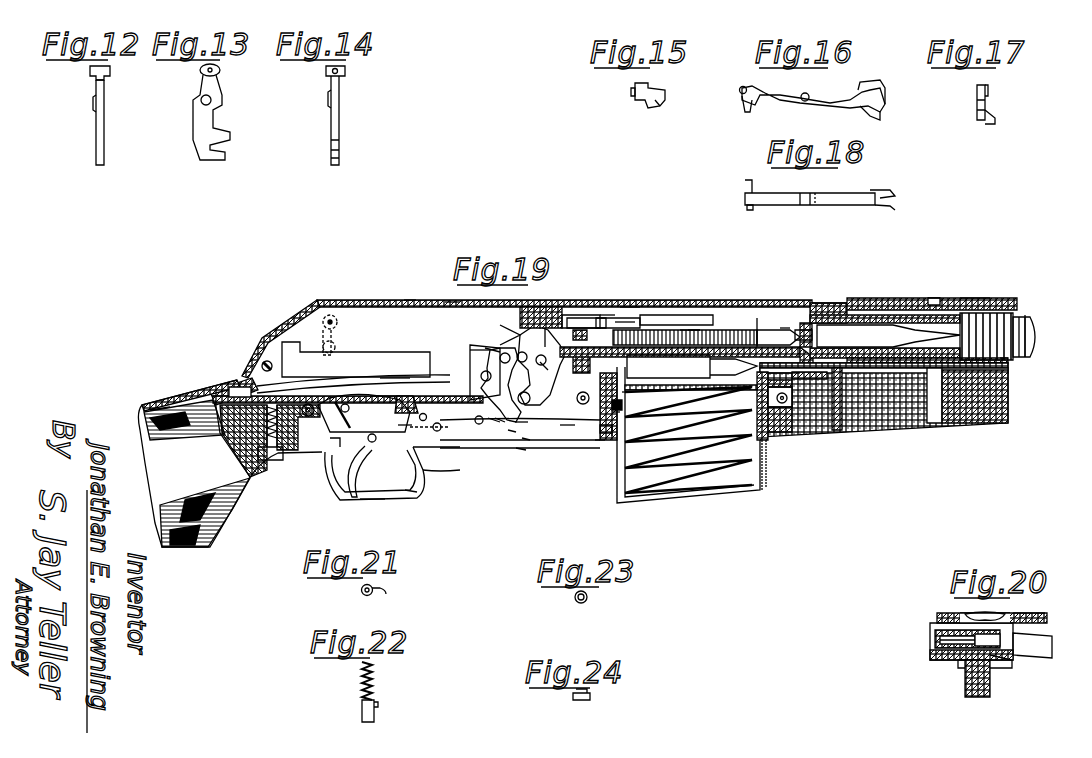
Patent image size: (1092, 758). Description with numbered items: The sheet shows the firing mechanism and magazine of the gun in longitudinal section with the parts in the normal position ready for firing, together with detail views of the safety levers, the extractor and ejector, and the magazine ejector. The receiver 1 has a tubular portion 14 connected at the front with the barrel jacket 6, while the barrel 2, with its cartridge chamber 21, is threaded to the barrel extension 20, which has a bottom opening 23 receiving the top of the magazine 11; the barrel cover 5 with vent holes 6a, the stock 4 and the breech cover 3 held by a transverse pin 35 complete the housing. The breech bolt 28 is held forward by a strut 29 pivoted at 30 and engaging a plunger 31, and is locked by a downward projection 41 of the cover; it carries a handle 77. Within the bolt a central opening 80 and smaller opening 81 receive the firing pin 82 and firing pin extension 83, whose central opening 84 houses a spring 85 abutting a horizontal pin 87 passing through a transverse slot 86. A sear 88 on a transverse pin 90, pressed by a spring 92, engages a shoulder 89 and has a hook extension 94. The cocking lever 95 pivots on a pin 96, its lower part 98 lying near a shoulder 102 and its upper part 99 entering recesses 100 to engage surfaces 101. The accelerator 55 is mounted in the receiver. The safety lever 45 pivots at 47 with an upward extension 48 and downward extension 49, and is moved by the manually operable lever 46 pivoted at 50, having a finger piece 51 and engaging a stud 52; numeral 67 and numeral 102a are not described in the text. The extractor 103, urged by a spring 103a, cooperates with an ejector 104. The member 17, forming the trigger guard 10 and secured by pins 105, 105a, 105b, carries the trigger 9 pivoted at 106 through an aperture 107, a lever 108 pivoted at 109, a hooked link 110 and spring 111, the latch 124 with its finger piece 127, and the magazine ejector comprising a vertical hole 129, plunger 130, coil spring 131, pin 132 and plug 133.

In FIG. 19, the receiver 1 is at (605, 320).
In FIG. 19, the barrel 2 is at (1036, 345).
In FIG. 19, the breech cover 3 is at (404, 300).
In FIG. 19, the stock 4 is at (156, 408).
In FIG. 19, the barrel cover 5 is at (975, 305).
In FIG. 19, the barrel jacket 6 is at (1012, 362).
In FIG. 19, the vent holes 6a is at (938, 298).
In FIG. 19, the trigger 9 is at (352, 452).
In FIG. 19, the trigger guard 10 is at (372, 500).
In FIG. 19, the magazine 11 is at (767, 468).
In FIG. 19, the tubular portion 14 is at (628, 308).
In FIG. 19, the member 17 is at (598, 442).
In FIG. 19, the barrel extension 20 is at (822, 303).
In FIG. 20, the barrel extension 20 is at (940, 612).
In FIG. 19, the cartridge chamber 21 is at (856, 342).
In FIG. 19, the bottom opening 23 is at (768, 363).
In FIG. 19, the breech bolt 28 is at (520, 332).
In FIG. 20, the breech bolt 28 is at (935, 628).
In FIG. 19, the strut 29 is at (396, 380).
In FIG. 19, the pivot 30 is at (485, 375).
In FIG. 19, the plunger 31 is at (240, 392).
In FIG. 19, the transverse pin 35 is at (260, 364).
In FIG. 19, the downward projection 41 is at (536, 308).
In FIG. 15, the connecting safety lever 45 is at (645, 108).
In FIG. 16, the connecting safety lever 45 is at (786, 100).
In FIG. 17, the connecting safety lever 45 is at (980, 122).
In FIG. 18, the connecting safety lever 45 is at (795, 207).
In FIG. 19, the connecting safety lever 45 is at (362, 416).
In FIG. 12, the manually operable safety lever 46 is at (105, 135).
In FIG. 13, the manually operable safety lever 46 is at (228, 95).
In FIG. 14, the manually operable safety lever 46 is at (340, 130).
In FIG. 19, the manually operable safety lever 46 is at (322, 337).
In FIG. 16, the pivot stud 47 is at (806, 101).
In FIG. 18, the pivot stud 47 is at (822, 206).
In FIG. 19, the pivot stud 47 is at (408, 395).
In FIG. 16, the upward extension 48 is at (882, 95).
In FIG. 17, the upward extension 48 is at (986, 96).
In FIG. 18, the upward extension 48 is at (882, 196).
In FIG. 19, the upward extension 48 is at (476, 425).
In FIG. 15, the downward extension 49 is at (658, 108).
In FIG. 16, the downward extension 49 is at (746, 104).
In FIG. 18, the downward extension 49 is at (752, 186).
In FIG. 19, the downward extension 49 is at (348, 414).
In FIG. 12, the pivot 50 is at (96, 108).
In FIG. 13, the pivot 50 is at (213, 105).
In FIG. 19, the pivot 50 is at (340, 345).
In FIG. 12, the finger piece 51 is at (92, 70).
In FIG. 13, the finger piece 51 is at (220, 70).
In FIG. 14, the finger piece 51 is at (346, 70).
In FIG. 19, the finger piece 51 is at (340, 322).
In FIG. 15, the stud 52 is at (633, 92).
In FIG. 16, the stud 52 is at (738, 90).
In FIG. 18, the stud 52 is at (750, 207).
In FIG. 19, the accelerator 55 is at (530, 398).
In FIG. 16, the sear nose 67 is at (880, 113).
In FIG. 17, the sear nose 67 is at (996, 118).
In FIG. 18, the sear nose 67 is at (880, 207).
In FIG. 20, the handle 77 is at (965, 678).
In FIG. 19, the central opening 80 is at (800, 335).
In FIG. 20, the central opening 80 is at (987, 639).
In FIG. 19, the smaller opening 81 is at (790, 323).
In FIG. 20, the smaller opening 81 is at (1032, 645).
In FIG. 19, the firing pin 82 is at (692, 330).
In FIG. 20, the firing pin 82 is at (935, 640).
In FIG. 19, the firing pin extension 83 is at (572, 315).
In FIG. 20, the firing pin extension 83 is at (935, 648).
In FIG. 19, the central opening 84 is at (685, 330).
In FIG. 19, the spring 85 is at (666, 330).
In FIG. 19, the transverse slot 86 is at (600, 320).
In FIG. 19, the horizontal pin 87 is at (623, 322).
In FIG. 19, the sear 88 is at (490, 350).
In FIG. 19, the shoulder 89 is at (445, 302).
In FIG. 19, the transverse pin 90 is at (510, 352).
In FIG. 19, the spring 92 is at (478, 352).
In FIG. 19, the hook extension 94 is at (500, 440).
In FIG. 19, the cocking lever 95 is at (527, 445).
In FIG. 19, the transverse pin 96 is at (540, 365).
In FIG. 19, the lower part 98 is at (522, 428).
In FIG. 19, the upper part 99 is at (537, 352).
In FIG. 19, the recesses 100 is at (540, 322).
In FIG. 19, the surfaces 101 is at (527, 305).
In FIG. 19, the shoulder 102 is at (496, 425).
In FIG. 19, the trigger plate rib 102a is at (387, 396).
In FIG. 20, the extractor 103 is at (1010, 662).
In FIG. 20, the spring 103a is at (962, 663).
In FIG. 20, the ejector 104 is at (1020, 616).
In FIG. 19, the pin 105 is at (790, 404).
In FIG. 19, the pin 105a is at (592, 410).
In FIG. 19, the pin 105b is at (307, 417).
In FIG. 19, the trigger pivot 106 is at (374, 443).
In FIG. 19, the aperture 107 is at (332, 445).
In FIG. 19, the lever 108 is at (404, 430).
In FIG. 19, the pivot 109 is at (437, 430).
In FIG. 19, the hooked link 110 is at (512, 438).
In FIG. 19, the spring 111 is at (521, 455).
In FIG. 19, the latch 124 is at (565, 430).
In FIG. 19, the finger piece 127 is at (416, 484).
In FIG. 19, the vertical hole 129 is at (614, 428).
In FIG. 19, the plunger 130 is at (620, 413).
In FIG. 21, the plunger 130 is at (362, 593).
In FIG. 22, the plunger 130 is at (362, 712).
In FIG. 19, the coil spring 131 is at (652, 392).
In FIG. 22, the coil spring 131 is at (375, 674).
In FIG. 19, the pin 132 is at (648, 405).
In FIG. 21, the pin 132 is at (385, 592).
In FIG. 22, the pin 132 is at (377, 704).
In FIG. 19, the plug 133 is at (607, 435).
In FIG. 23, the plug 133 is at (588, 598).
In FIG. 24, the plug 133 is at (592, 702).